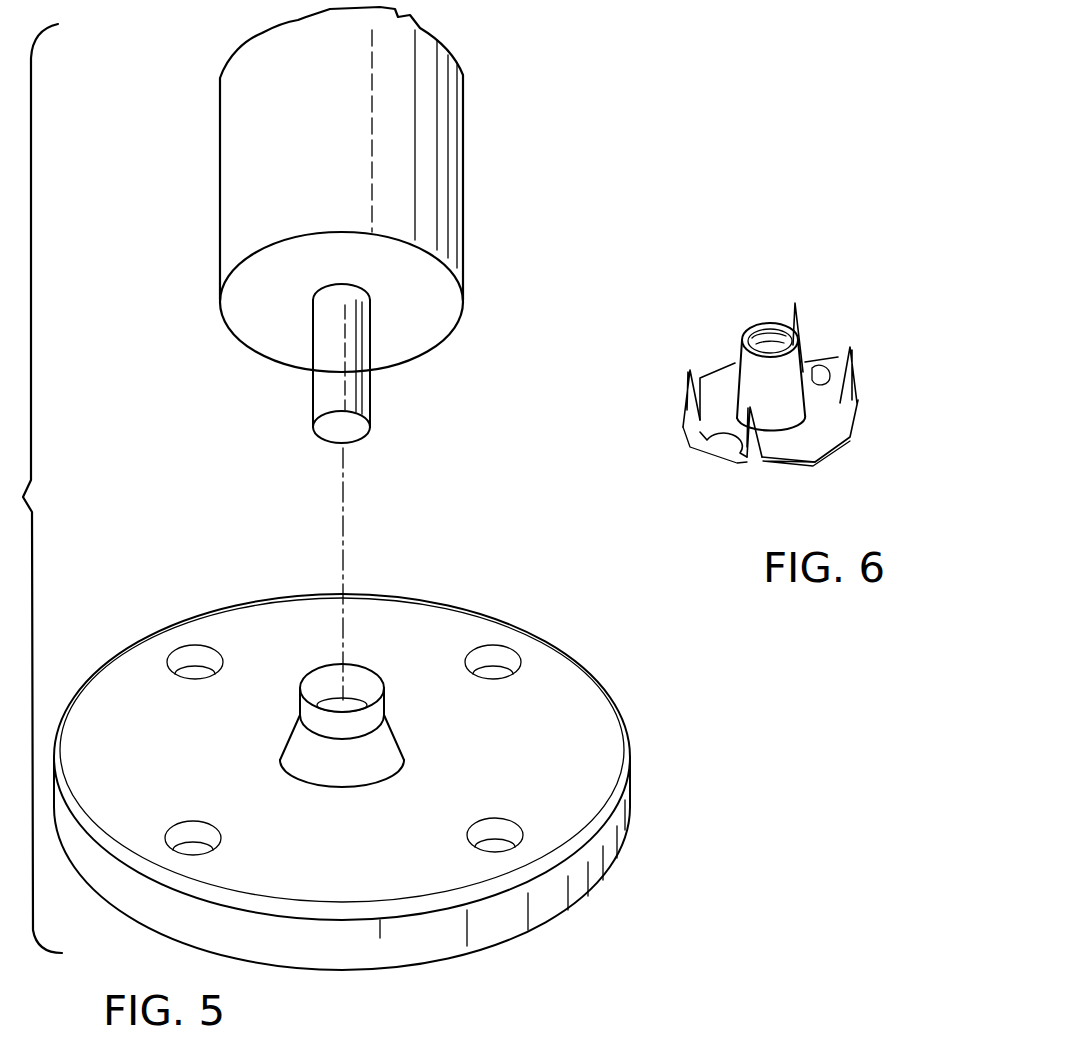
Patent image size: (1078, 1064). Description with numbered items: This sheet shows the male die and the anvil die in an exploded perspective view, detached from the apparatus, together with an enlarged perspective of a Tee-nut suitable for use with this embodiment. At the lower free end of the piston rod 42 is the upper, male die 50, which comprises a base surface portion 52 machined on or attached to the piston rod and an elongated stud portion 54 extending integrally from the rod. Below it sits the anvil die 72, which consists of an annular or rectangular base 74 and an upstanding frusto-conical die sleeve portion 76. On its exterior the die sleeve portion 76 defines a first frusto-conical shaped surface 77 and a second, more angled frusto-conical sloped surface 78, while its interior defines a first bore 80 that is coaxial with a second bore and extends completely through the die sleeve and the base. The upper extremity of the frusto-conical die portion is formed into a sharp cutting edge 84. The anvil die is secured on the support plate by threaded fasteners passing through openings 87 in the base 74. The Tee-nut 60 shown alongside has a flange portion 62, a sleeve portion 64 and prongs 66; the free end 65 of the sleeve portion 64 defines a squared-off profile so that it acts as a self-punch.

In FIG. 5, the piston rod 42 is at (243, 125).
In FIG. 5, the male die 50 is at (272, 229).
In FIG. 5, the base surface portion 52 is at (262, 328).
In FIG. 5, the stud portion 54 is at (320, 391).
In FIG. 5, the anvil die 72 is at (376, 707).
In FIG. 5, the base 74 is at (135, 710).
In FIG. 5, the die sleeve portion 76 is at (444, 645).
In FIG. 5, the first frusto-conical shaped surface 77 is at (292, 738).
In FIG. 5, the second frusto-conical sloped surface 78 is at (383, 703).
In FIG. 5, the first bore 80 is at (330, 668).
In FIG. 5, the cutting edge 84 is at (350, 695).
In FIG. 5, the openings 87 is at (190, 645).
In FIG. 6, the Tee-nut 60 is at (751, 351).
In FIG. 6, the flange portion 62 is at (780, 462).
In FIG. 6, the sleeve portion 64 is at (760, 401).
In FIG. 6, the free end 65 is at (768, 325).
In FIG. 6, the prongs 66 is at (793, 305).